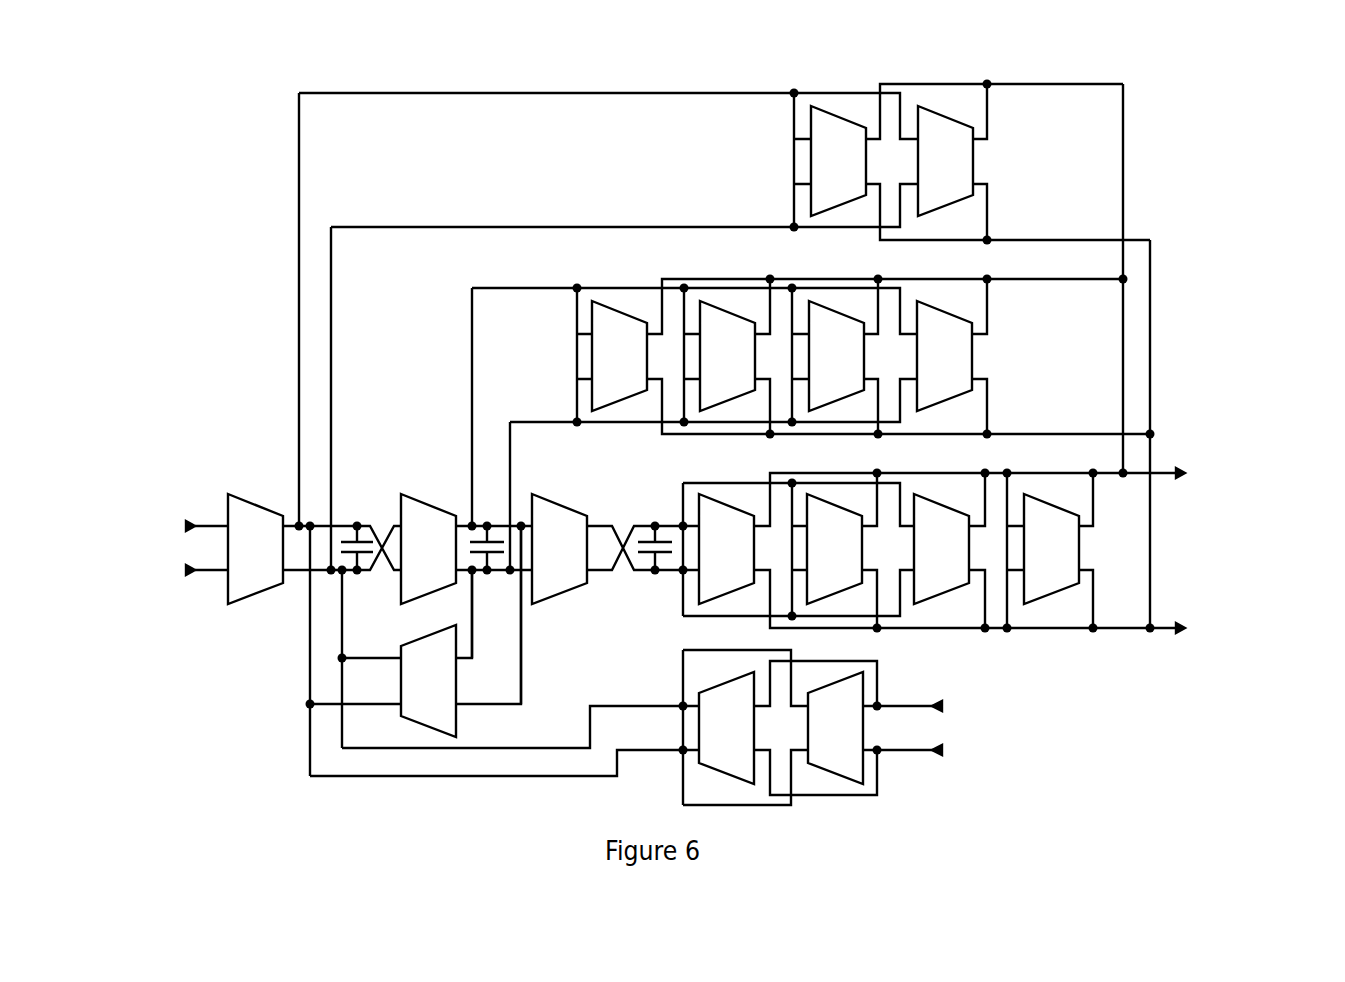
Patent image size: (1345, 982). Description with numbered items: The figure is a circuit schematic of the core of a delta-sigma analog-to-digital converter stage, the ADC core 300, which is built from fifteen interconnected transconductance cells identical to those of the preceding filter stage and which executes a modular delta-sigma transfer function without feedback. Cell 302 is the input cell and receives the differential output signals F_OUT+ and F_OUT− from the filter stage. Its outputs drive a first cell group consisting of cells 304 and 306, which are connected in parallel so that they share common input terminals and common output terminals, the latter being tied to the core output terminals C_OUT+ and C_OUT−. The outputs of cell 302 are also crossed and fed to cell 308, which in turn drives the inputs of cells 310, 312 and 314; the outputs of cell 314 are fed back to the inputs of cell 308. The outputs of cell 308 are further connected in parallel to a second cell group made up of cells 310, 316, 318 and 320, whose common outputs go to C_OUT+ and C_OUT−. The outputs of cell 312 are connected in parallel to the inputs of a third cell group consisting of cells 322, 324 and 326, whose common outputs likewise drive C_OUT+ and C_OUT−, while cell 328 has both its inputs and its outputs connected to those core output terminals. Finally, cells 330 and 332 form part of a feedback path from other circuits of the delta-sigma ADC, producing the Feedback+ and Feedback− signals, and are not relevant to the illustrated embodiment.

The ADC core 300 is at (598, 78).
The input cell 302 is at (255, 549).
The cell 304 is at (838, 161).
The cell 306 is at (945, 161).
The cell 308 is at (428, 549).
The cell 310 is at (619, 356).
The cell 312 is at (559, 549).
The cell 314 is at (428, 681).
The cell 316 is at (727, 356).
The cell 318 is at (836, 356).
The cell 320 is at (944, 356).
The cell 322 is at (726, 549).
The cell 324 is at (834, 549).
The cell 326 is at (941, 549).
The cell 328 is at (1051, 549).
The cell 330 is at (726, 728).
The cell 332 is at (835, 728).